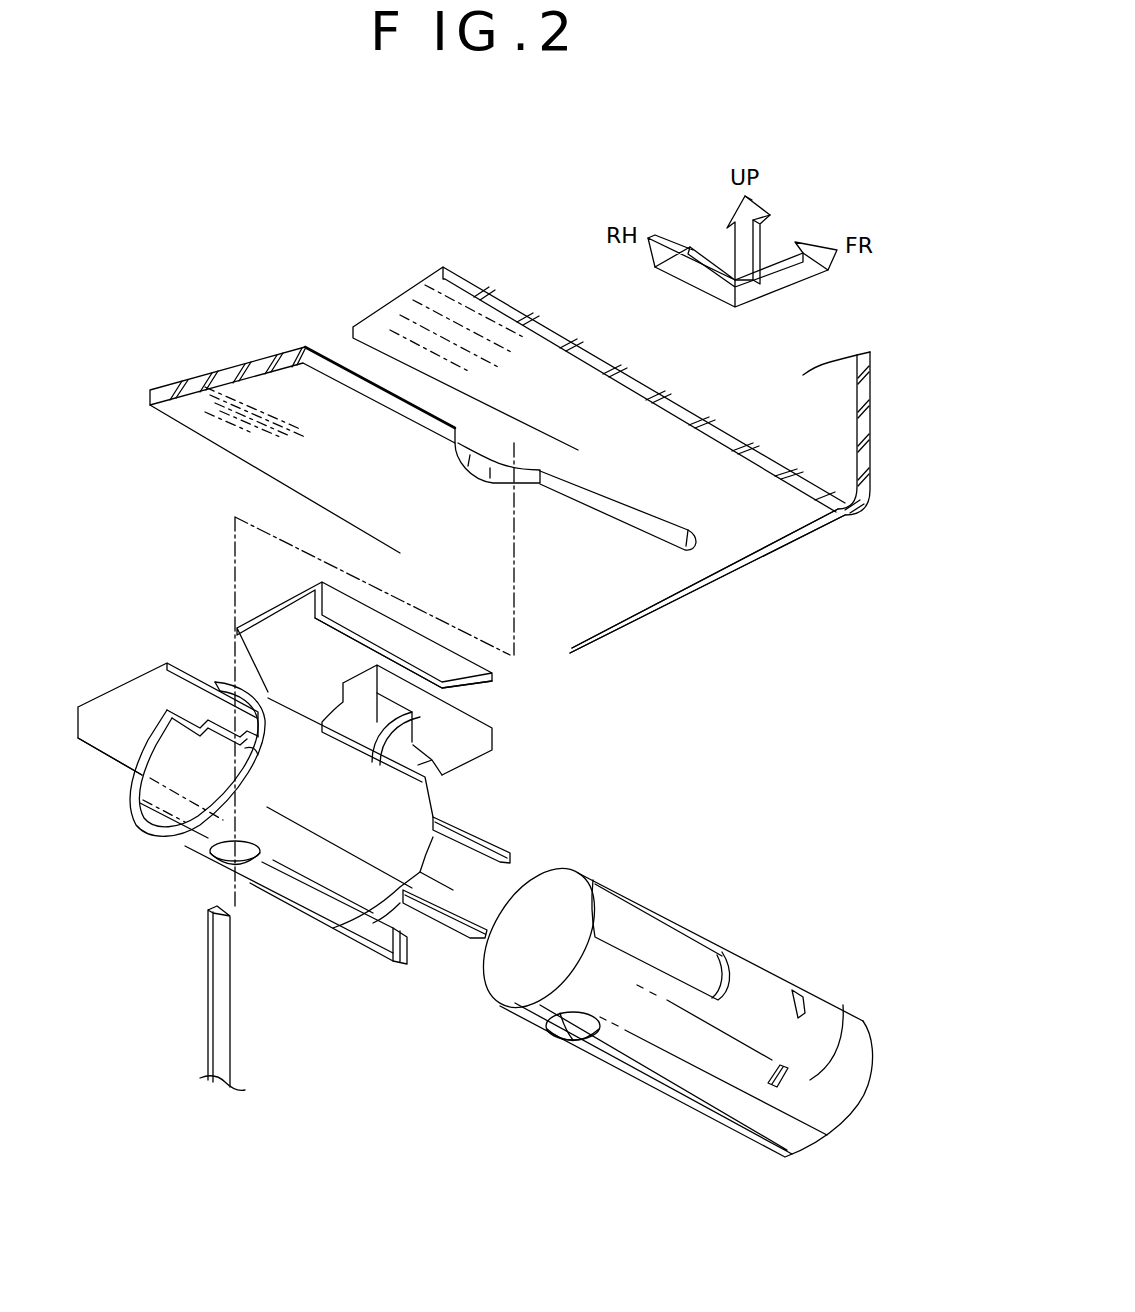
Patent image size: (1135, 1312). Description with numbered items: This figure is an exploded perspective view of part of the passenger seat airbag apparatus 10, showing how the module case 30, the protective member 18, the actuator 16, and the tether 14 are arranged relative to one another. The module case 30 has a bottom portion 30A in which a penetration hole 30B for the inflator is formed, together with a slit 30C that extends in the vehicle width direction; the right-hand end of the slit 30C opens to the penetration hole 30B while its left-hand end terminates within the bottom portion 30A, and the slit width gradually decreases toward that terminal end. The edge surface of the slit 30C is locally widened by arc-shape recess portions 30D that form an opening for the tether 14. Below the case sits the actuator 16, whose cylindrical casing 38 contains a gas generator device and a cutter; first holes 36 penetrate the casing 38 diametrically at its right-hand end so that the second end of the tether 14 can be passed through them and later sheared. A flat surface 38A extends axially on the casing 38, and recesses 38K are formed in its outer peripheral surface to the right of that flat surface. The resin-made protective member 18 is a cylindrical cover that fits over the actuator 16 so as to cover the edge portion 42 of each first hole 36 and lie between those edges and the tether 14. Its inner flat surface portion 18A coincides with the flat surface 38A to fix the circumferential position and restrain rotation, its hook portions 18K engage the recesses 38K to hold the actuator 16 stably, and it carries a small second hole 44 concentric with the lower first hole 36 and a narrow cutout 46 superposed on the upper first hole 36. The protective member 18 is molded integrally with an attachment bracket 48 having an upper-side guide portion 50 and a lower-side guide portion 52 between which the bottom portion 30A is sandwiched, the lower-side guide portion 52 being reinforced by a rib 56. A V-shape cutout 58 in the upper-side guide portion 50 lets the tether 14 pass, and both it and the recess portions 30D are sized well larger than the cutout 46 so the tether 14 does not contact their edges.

The passenger seat airbag apparatus 10 is at (152, 282).
The tether 14 is at (237, 1033).
The actuator 16 is at (795, 929).
The protective member 18 is at (301, 924).
The flat surface portion 18A is at (242, 760).
The hook portions 18K is at (510, 857).
The module case 30 is at (743, 572).
The bottom portion 30A is at (622, 600).
The penetration hole 30B is at (265, 317).
The slit 30C is at (352, 347).
The recess portions 30D is at (540, 432).
The first holes 36 is at (581, 1030).
The casing 38 is at (733, 953).
The flat surface 38A is at (613, 913).
The recesses 38K is at (788, 1080).
The edge portion 42 is at (567, 1035).
The second hole 44 is at (227, 853).
The cutout 46 is at (228, 708).
The attachment bracket 48 is at (133, 655).
The upper-side guide portion 50 is at (95, 752).
The lower-side guide portion 52 is at (493, 715).
The rib 56 is at (473, 748).
The cutout 58 is at (227, 660).